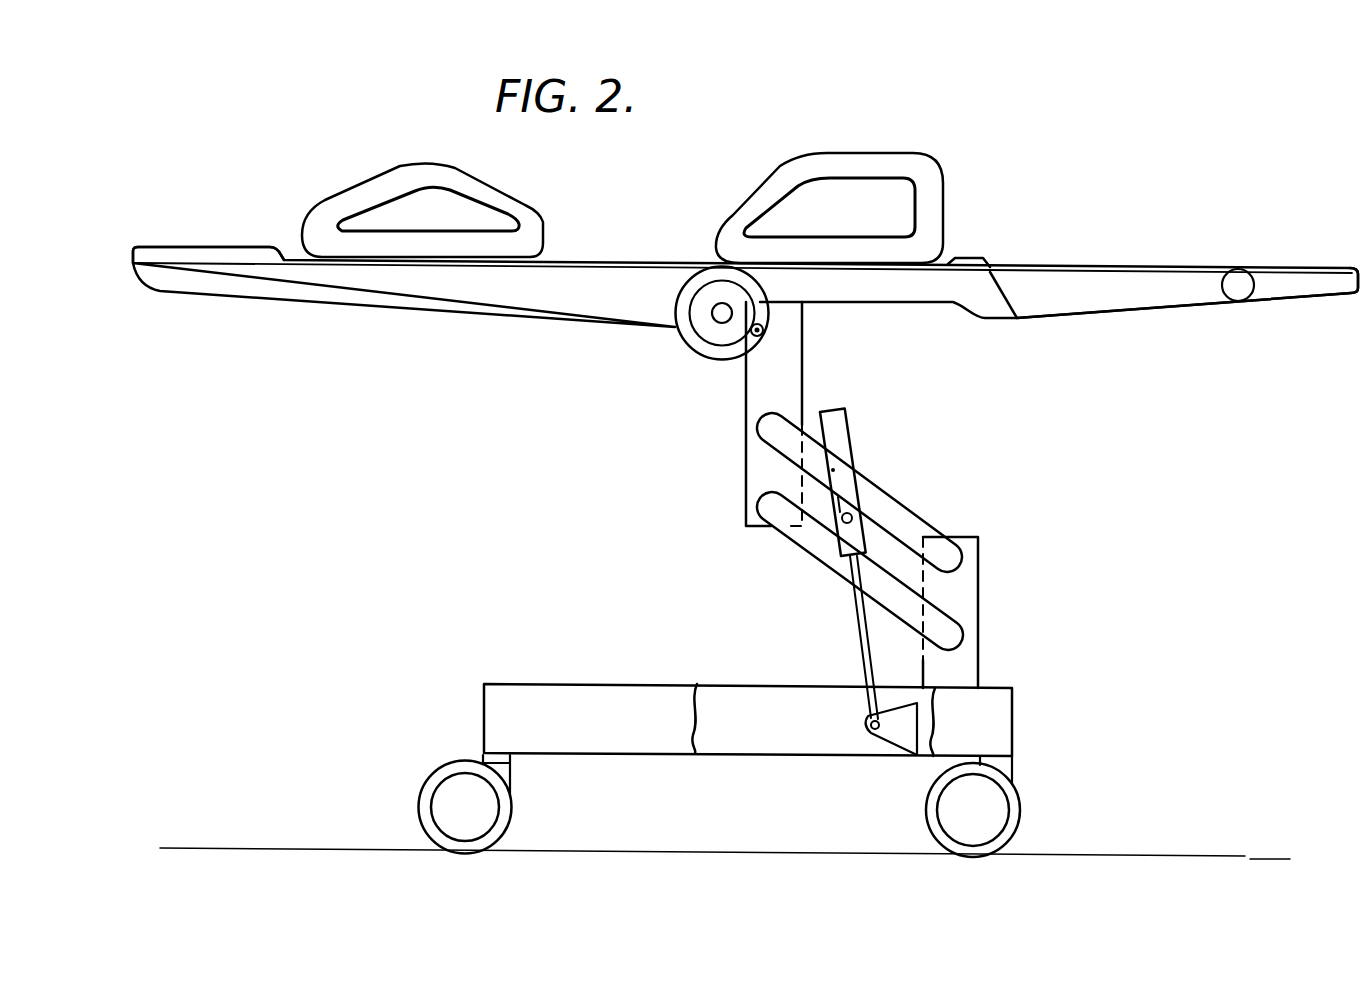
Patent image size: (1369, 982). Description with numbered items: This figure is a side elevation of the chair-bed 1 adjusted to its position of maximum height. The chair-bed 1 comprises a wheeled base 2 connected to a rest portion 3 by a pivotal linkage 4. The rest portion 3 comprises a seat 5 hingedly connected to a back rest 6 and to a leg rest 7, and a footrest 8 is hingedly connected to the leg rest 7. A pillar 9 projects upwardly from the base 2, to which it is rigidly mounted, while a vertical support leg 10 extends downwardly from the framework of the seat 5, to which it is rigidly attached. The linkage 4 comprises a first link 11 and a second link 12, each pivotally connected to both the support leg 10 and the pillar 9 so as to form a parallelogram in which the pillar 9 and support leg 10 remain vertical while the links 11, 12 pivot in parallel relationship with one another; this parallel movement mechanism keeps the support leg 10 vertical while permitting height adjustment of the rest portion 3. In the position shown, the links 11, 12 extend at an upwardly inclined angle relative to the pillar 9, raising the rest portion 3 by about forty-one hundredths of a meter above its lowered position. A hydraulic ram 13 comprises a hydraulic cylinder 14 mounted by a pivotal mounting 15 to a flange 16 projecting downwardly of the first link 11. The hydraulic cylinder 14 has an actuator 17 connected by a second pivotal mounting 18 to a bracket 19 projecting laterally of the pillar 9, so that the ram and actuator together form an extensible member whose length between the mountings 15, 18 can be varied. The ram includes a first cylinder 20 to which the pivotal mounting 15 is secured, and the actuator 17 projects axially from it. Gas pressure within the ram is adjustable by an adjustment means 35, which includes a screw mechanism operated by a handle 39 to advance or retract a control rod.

The chair-bed 1 is at (305, 456).
The wheeled base 2 is at (598, 738).
The rest portion 3 is at (457, 296).
The pivotal linkage 4 is at (980, 428).
The seat 5 is at (872, 285).
The back rest 6 is at (291, 287).
The leg rest 7 is at (1153, 282).
The footrest 8 is at (1293, 282).
The pillar 9 is at (968, 610).
The vertical support leg 10 is at (790, 356).
The first link 11 is at (782, 440).
The second link 12 is at (830, 574).
The hydraulic ram 13 is at (866, 416).
The hydraulic cylinder 14 is at (832, 470).
The pivotal mounting 15 is at (858, 515).
The flange 16 is at (865, 492).
The actuator 17 is at (866, 650).
The second pivotal mounting 18 is at (870, 728).
The bracket 19 is at (893, 731).
The first cylinder 20 is at (846, 439).
The adjustment means 35 is at (668, 334).
The handle 39 is at (763, 333).